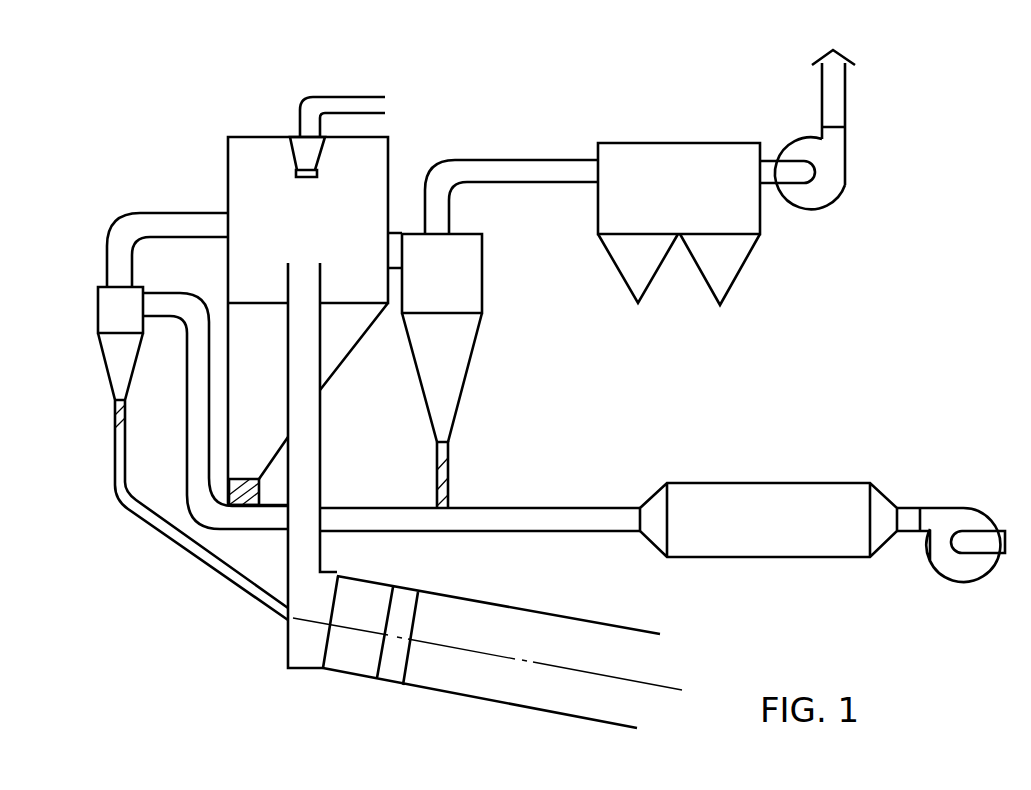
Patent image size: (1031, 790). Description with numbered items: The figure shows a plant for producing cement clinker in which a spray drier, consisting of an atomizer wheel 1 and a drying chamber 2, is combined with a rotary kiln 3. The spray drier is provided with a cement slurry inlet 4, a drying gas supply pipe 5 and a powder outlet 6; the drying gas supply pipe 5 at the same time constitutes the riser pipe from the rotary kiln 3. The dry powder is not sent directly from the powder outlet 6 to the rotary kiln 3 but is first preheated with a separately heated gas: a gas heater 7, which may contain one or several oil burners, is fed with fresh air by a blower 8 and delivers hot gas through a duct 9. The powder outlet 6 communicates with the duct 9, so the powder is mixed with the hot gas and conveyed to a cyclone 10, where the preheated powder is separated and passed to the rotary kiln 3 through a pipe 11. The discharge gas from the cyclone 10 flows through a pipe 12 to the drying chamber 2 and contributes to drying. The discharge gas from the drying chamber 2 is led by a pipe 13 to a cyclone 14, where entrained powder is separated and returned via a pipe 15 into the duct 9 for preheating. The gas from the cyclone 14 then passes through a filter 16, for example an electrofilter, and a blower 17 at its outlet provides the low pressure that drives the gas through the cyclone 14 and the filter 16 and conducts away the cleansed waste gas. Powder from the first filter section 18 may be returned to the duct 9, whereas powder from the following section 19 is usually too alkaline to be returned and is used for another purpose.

The atomizer wheel 1 is at (298, 152).
The drying chamber 2 is at (388, 178).
The rotary kiln 3 is at (535, 620).
The cement slurry inlet 4 is at (342, 107).
The drying gas supply pipe 5 is at (310, 410).
The powder outlet 6 is at (254, 492).
The gas heater 7 is at (800, 497).
The blower 8 is at (968, 517).
The duct 9 is at (628, 513).
The cyclone 10 is at (102, 309).
The pipe 11 is at (170, 540).
The pipe 12 is at (158, 222).
The pipe 13 is at (393, 241).
The cyclone 14 is at (478, 288).
The pipe 15 is at (446, 478).
The filter 16 is at (688, 150).
The blower 17 is at (840, 137).
The first filter section 18 is at (632, 283).
The following filter section 19 is at (712, 283).